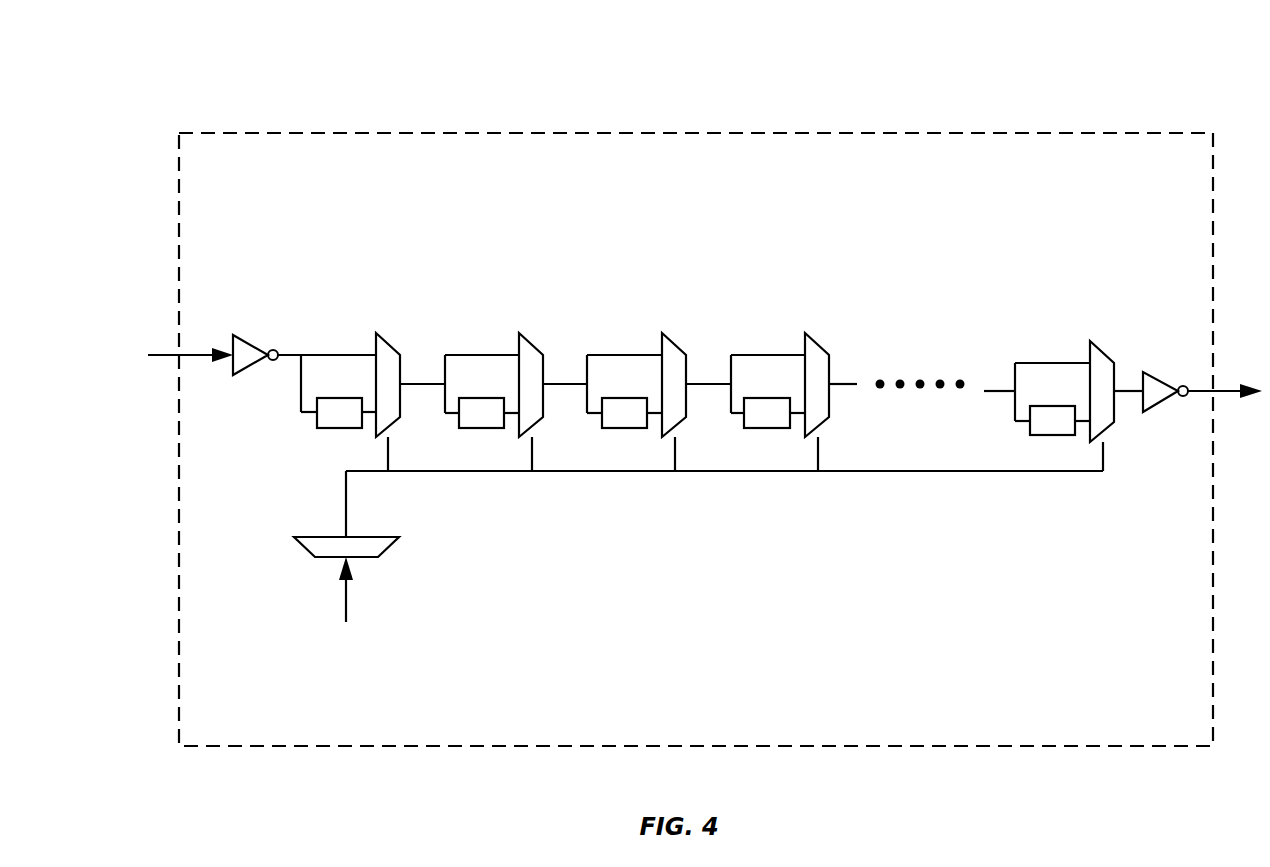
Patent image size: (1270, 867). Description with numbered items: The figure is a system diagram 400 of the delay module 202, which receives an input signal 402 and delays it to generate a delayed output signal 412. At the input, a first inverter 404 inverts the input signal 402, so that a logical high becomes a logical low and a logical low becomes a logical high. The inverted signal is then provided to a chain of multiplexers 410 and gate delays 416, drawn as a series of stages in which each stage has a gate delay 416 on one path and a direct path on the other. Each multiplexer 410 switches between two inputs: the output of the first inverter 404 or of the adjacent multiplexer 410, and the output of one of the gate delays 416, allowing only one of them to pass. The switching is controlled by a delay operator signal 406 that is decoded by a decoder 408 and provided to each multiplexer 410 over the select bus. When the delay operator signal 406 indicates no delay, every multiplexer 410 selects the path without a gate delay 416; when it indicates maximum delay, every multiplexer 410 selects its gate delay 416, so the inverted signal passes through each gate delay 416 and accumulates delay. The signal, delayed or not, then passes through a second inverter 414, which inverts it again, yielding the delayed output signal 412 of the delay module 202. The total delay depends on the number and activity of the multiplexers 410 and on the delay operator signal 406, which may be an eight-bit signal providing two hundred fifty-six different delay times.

The system diagram 400 is at (228, 98).
The delay module 202 is at (920, 193).
The input signal 402 is at (167, 354).
The first inverter 404 is at (242, 336).
The delay operator signal 406 is at (347, 610).
The decoder 408 is at (307, 558).
The multiplexer 410 is at (1090, 357).
The delayed output signal 412 is at (1197, 391).
The second inverter 414 is at (1160, 412).
The gate delay 416 is at (338, 428).